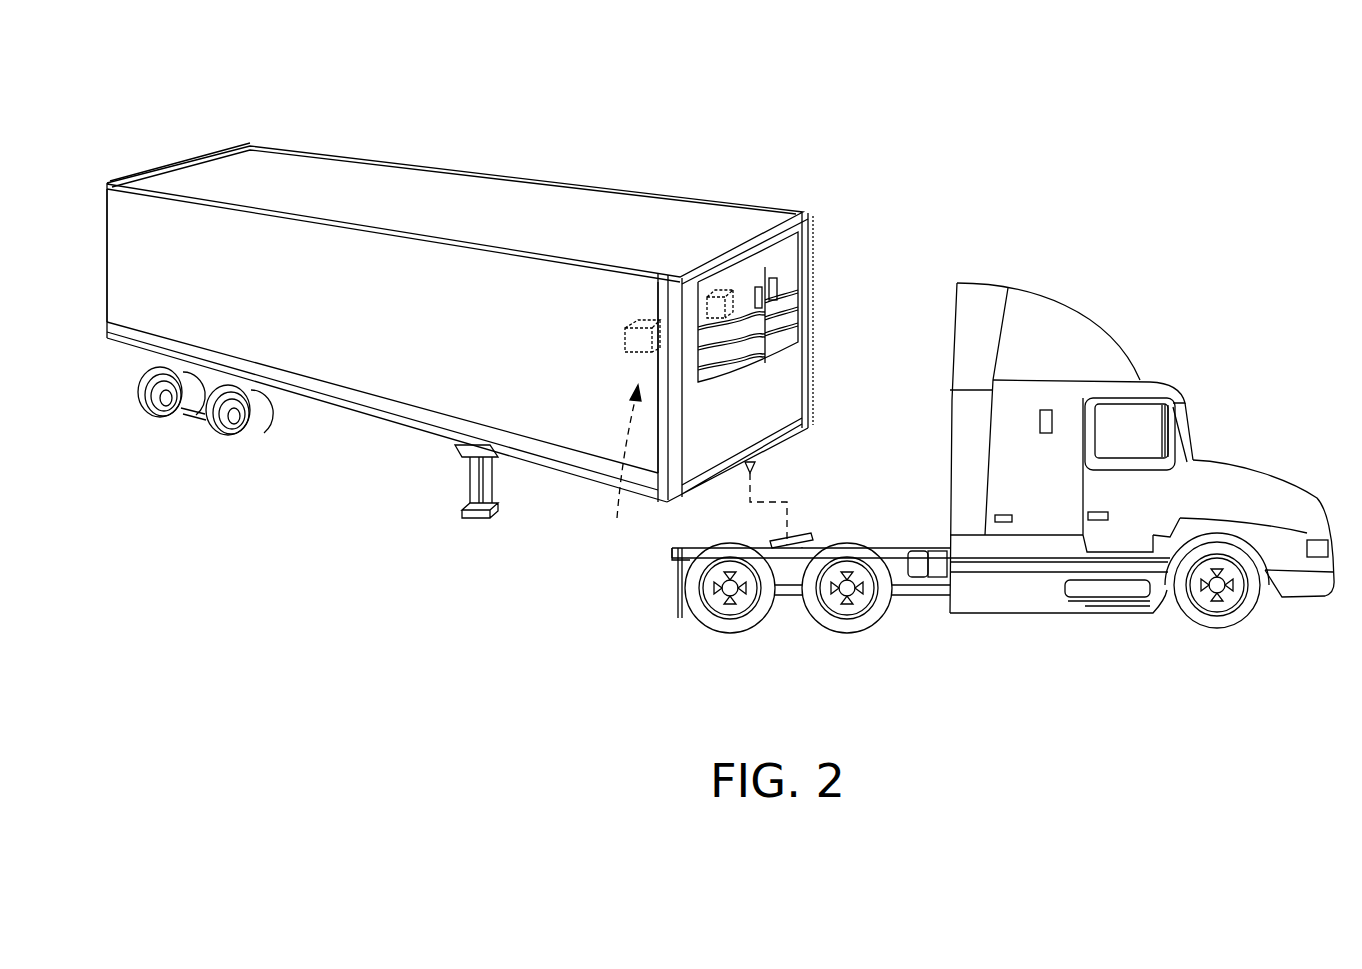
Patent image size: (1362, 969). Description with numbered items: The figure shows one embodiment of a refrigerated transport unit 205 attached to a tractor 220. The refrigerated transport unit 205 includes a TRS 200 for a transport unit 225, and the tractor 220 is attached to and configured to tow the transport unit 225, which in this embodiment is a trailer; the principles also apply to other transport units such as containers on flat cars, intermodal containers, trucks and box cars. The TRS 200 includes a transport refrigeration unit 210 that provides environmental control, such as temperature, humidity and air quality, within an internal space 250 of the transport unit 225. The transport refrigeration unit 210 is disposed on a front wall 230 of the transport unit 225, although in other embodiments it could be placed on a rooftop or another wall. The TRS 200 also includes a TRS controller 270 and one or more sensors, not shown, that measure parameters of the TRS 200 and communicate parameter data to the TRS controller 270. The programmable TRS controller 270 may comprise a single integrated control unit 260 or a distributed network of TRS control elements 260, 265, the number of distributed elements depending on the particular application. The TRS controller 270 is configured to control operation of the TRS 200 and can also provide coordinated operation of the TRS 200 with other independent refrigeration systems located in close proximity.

The TRS 200 is at (767, 150).
The refrigerated transport unit 205 is at (297, 97).
The transport refrigeration unit 210 is at (792, 275).
The tractor 220 is at (1215, 460).
The transport unit 225 is at (553, 180).
The front wall 230 is at (805, 212).
The internal space 250 is at (406, 318).
The integrated control unit 260 is at (737, 290).
The TRS control element 265 is at (626, 330).
The TRS controller 270 is at (618, 465).